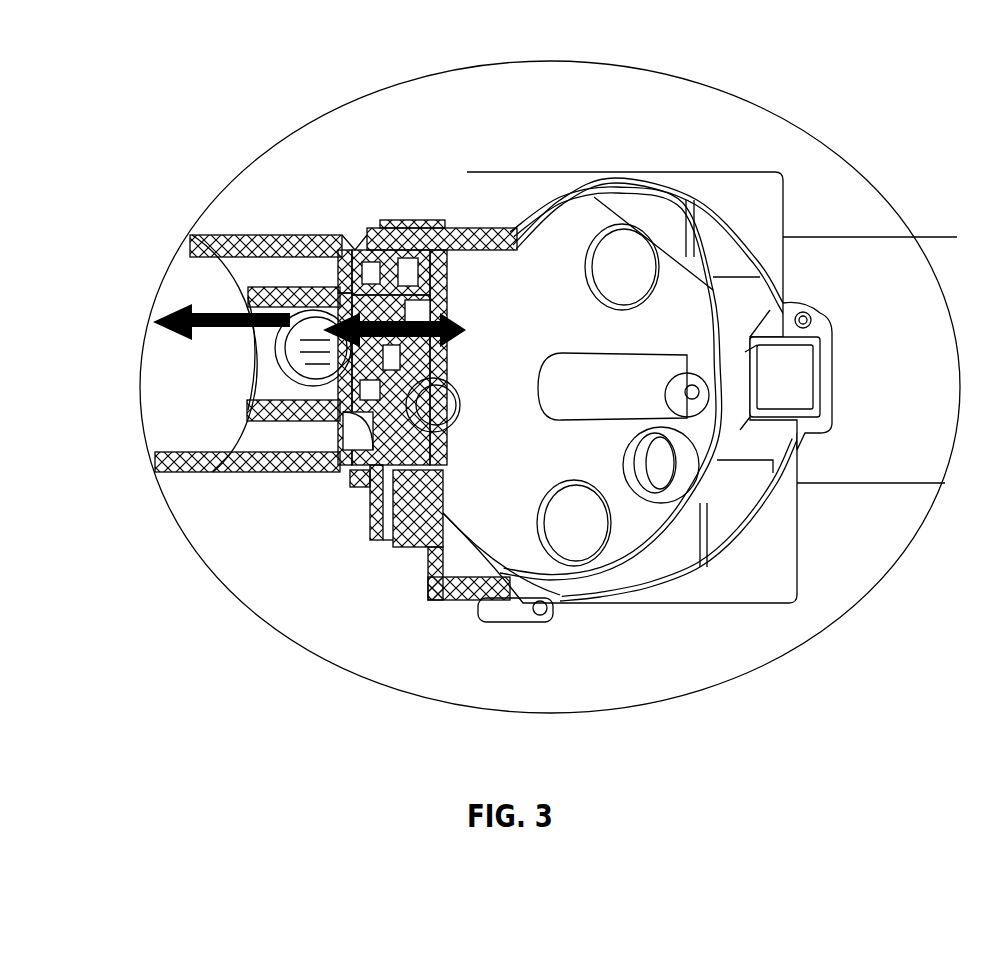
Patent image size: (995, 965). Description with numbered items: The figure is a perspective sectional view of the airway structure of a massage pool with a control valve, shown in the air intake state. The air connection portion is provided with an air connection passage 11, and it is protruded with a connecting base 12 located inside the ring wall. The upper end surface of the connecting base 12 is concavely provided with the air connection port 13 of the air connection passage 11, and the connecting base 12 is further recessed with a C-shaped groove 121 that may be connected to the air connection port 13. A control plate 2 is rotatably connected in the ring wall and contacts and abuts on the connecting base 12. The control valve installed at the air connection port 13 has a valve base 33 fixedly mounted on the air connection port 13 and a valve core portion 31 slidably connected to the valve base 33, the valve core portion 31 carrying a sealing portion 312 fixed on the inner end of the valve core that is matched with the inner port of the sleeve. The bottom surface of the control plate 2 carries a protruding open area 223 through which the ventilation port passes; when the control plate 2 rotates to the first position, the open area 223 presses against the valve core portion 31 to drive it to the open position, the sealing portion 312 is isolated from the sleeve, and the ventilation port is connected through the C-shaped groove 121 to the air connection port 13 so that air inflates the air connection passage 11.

The control plate 2 is at (440, 420).
The air connection passage 11 is at (267, 344).
The connecting base 12 is at (318, 470).
The air connection port 13 is at (317, 283).
The valve core portion 31 is at (293, 423).
The valve base 33 is at (367, 253).
The C-shaped groove 121 is at (370, 538).
The open area 223 is at (433, 247).
The sealing portion 312 is at (250, 288).